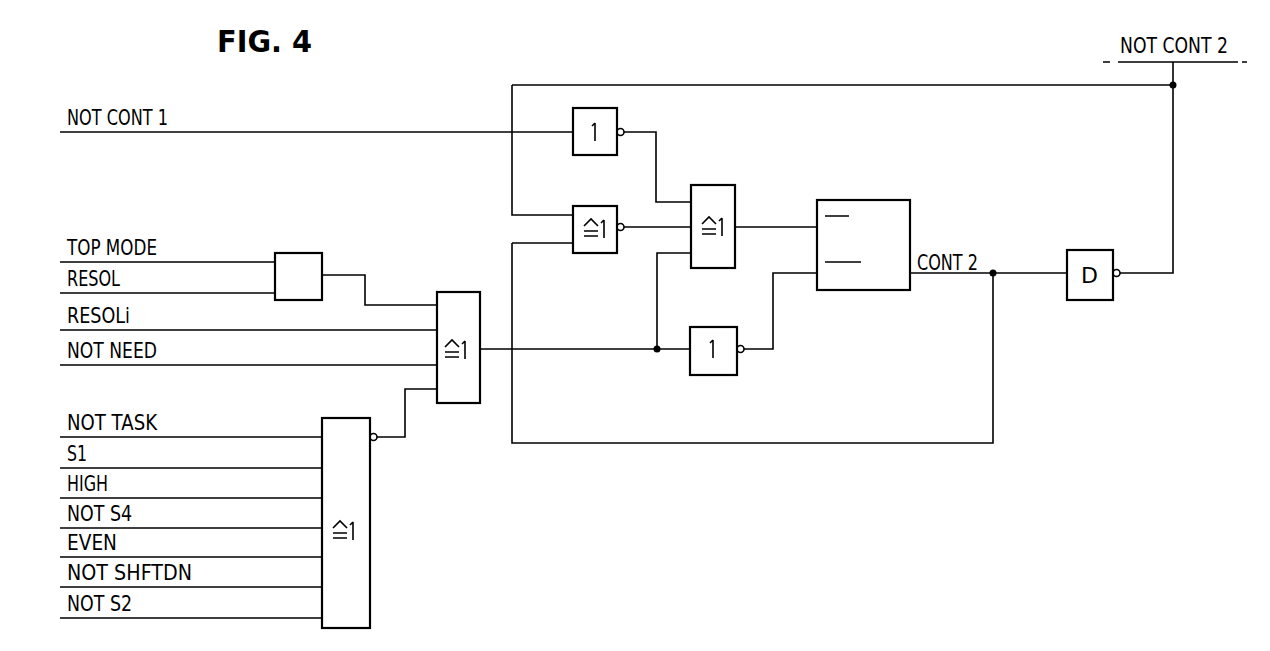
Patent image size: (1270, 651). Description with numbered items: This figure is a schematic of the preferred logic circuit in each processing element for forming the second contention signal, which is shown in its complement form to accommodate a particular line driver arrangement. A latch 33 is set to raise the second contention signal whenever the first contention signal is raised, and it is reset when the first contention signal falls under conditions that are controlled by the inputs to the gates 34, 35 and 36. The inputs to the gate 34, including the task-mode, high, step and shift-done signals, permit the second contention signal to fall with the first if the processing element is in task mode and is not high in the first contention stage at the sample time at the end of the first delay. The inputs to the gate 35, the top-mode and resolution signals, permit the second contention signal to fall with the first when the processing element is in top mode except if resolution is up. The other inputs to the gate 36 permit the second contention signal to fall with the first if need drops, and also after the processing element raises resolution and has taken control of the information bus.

The latch 33 is at (877, 284).
The gate 34 is at (367, 556).
The gate 35 is at (310, 253).
The gate 36 is at (458, 398).